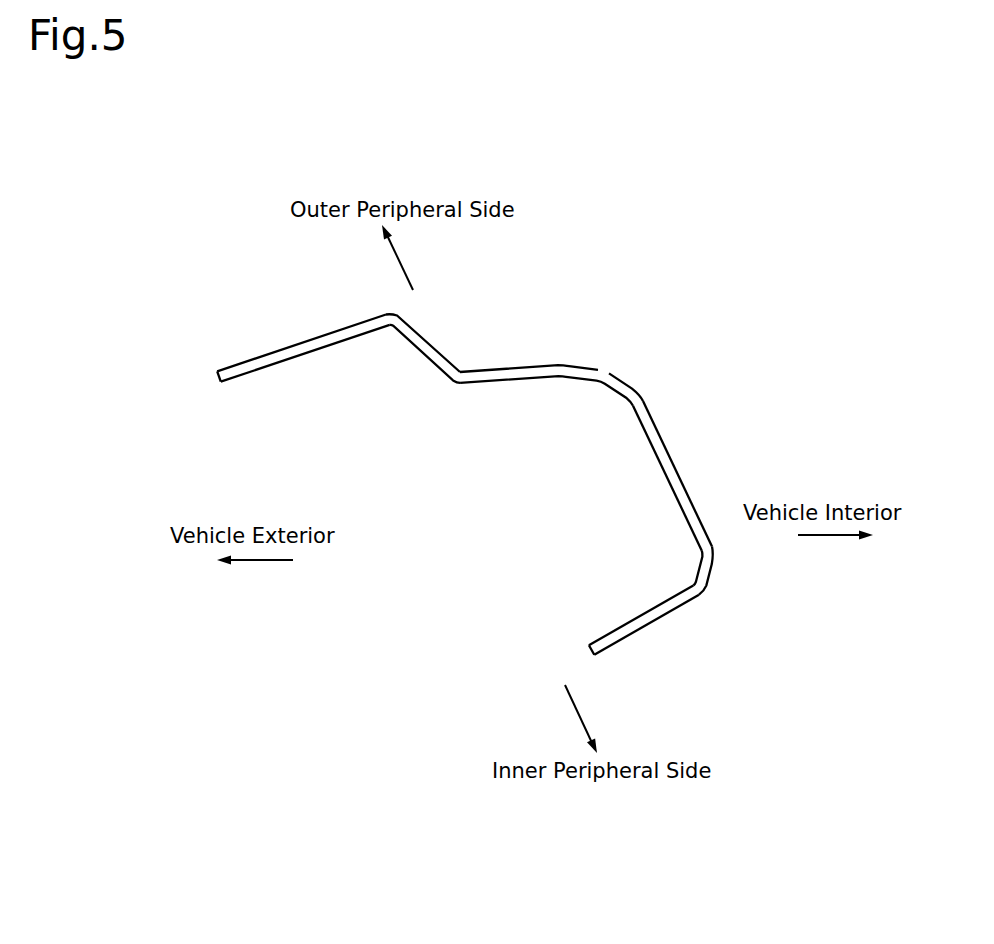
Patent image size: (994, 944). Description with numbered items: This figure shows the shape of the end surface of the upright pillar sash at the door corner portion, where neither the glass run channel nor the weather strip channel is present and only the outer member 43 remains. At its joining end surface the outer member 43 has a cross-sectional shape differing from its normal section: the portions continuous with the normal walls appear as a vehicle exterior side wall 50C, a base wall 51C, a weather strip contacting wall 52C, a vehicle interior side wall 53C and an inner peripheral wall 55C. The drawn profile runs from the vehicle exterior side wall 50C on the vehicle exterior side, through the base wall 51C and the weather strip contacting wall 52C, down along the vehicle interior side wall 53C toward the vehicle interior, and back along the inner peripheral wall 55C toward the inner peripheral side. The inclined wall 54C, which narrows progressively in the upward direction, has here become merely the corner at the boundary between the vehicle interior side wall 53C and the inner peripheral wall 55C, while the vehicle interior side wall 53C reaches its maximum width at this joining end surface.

The outer member 43 is at (602, 364).
The vehicle exterior side wall 50C is at (297, 350).
The base wall 51C is at (433, 350).
The weather strip contacting wall 52C is at (521, 375).
The vehicle interior side wall 53C is at (672, 460).
The inclined wall 54C is at (710, 573).
The inner peripheral wall 55C is at (653, 618).